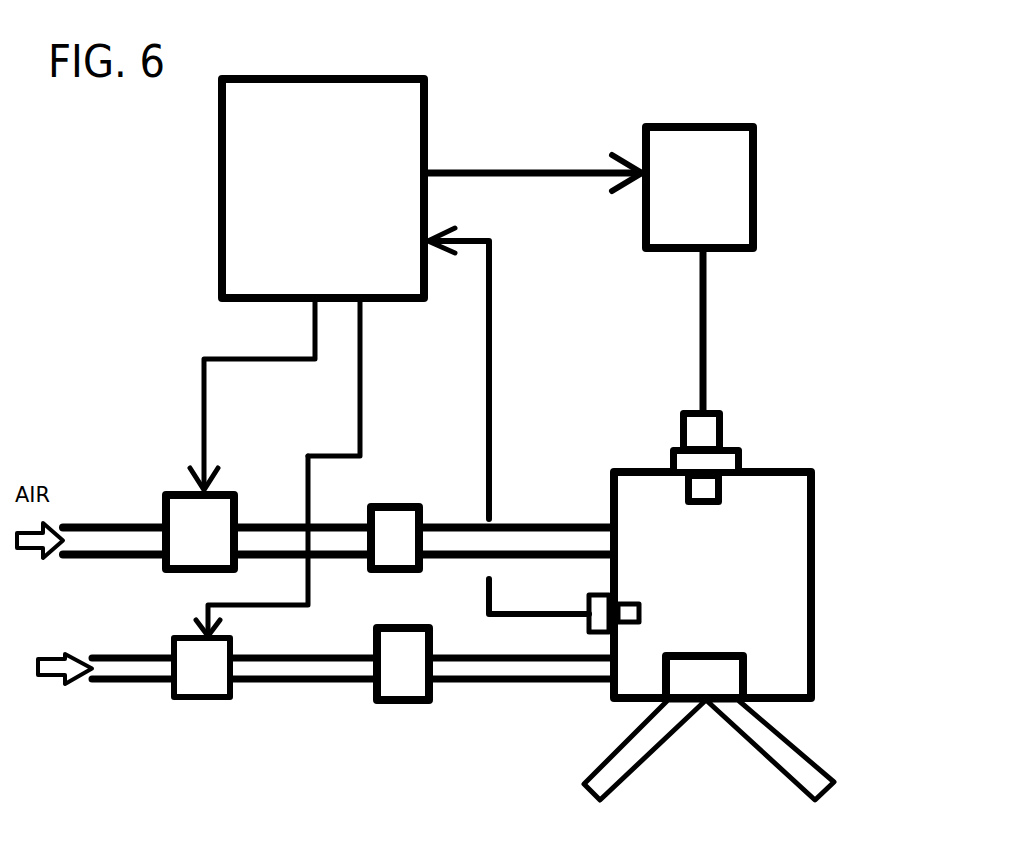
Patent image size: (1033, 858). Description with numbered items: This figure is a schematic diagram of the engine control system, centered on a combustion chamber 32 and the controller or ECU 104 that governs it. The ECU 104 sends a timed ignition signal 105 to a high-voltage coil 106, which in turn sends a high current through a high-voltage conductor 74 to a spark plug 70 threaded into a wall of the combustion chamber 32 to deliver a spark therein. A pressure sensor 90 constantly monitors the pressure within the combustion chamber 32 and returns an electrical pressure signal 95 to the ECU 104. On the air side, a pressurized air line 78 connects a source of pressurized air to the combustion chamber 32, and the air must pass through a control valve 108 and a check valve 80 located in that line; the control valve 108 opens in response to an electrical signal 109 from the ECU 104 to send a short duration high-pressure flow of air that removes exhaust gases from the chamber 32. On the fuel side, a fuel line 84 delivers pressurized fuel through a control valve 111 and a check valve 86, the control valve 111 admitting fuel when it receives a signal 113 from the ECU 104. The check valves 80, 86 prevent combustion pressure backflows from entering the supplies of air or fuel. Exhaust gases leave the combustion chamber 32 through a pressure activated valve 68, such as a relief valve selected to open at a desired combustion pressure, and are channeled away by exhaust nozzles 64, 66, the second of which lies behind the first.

The ECU 104 is at (428, 108).
The timed ignition signal 105 is at (495, 167).
The high-voltage coil 106 is at (755, 178).
The high-voltage conductor 74 is at (703, 336).
The spark plug 70 is at (722, 432).
The combustion chamber 32 is at (667, 533).
The pressure activated valve 68 is at (728, 655).
The exhaust nozzle 64 is at (589, 763).
The exhaust nozzle 66 is at (805, 753).
The pressure sensor 90 is at (597, 615).
The electrical pressure signal 95 is at (490, 372).
The electrical signal 109 is at (203, 403).
The control valve 108 is at (200, 490).
The signal 113 is at (362, 425).
The pressurized air line 78 is at (300, 525).
The check valve 80 is at (398, 514).
The control valve 111 is at (193, 688).
The fuel line 84 is at (300, 683).
The check valve 86 is at (397, 703).